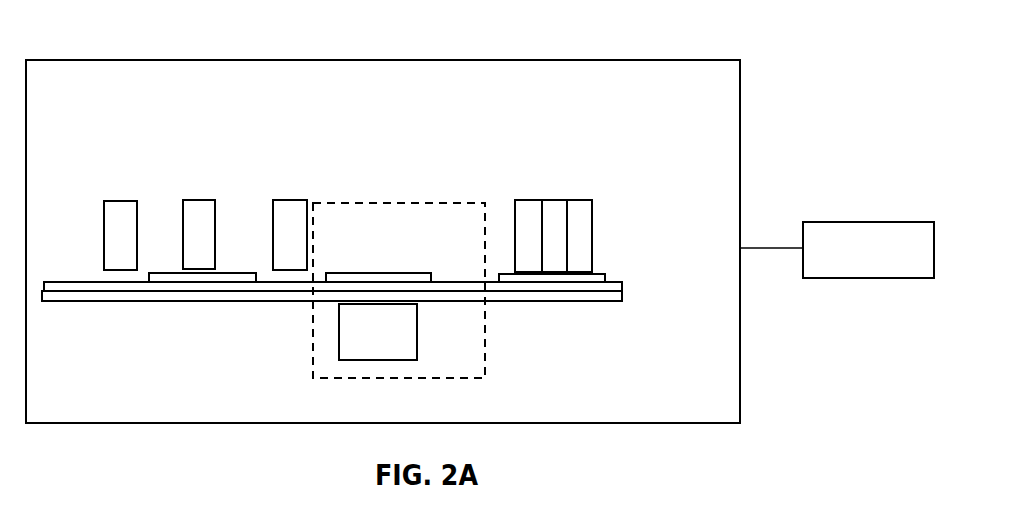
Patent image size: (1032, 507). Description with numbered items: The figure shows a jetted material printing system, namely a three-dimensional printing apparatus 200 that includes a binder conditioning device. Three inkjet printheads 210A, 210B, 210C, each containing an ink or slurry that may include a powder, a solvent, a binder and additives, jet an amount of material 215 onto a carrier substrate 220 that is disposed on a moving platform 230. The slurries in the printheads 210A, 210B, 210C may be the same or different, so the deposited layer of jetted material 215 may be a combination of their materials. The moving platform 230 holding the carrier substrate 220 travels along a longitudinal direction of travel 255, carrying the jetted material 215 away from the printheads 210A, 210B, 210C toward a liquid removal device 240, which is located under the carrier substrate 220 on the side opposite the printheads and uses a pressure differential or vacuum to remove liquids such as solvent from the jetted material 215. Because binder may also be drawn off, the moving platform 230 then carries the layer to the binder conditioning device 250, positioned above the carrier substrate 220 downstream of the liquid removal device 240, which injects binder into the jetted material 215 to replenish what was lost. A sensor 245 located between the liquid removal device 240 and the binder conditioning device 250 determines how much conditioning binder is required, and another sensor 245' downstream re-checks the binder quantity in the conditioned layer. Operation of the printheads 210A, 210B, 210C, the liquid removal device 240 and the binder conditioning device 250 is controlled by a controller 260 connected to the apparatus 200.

The 3D printing apparatus 200 is at (152, 58).
The sensor 245' is at (88, 224).
The binder conditioning device 250 is at (182, 225).
The sensor 245 is at (267, 210).
The printhead 210A is at (526, 198).
The printhead 210B is at (563, 198).
The printhead 210C is at (597, 197).
The jetted material 215 is at (606, 273).
The direction of travel 255 is at (632, 285).
The carrier substrate 220 is at (551, 291).
The moving platform 230 is at (263, 302).
The liquid removal device 240 is at (419, 325).
The controller 260 is at (862, 221).